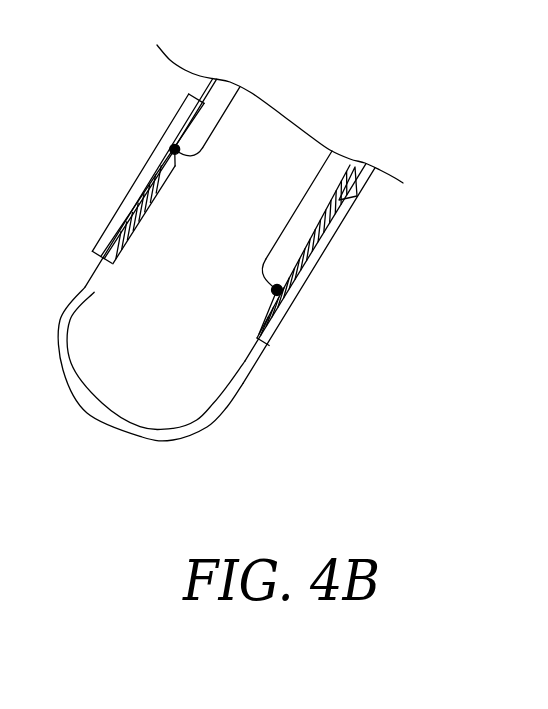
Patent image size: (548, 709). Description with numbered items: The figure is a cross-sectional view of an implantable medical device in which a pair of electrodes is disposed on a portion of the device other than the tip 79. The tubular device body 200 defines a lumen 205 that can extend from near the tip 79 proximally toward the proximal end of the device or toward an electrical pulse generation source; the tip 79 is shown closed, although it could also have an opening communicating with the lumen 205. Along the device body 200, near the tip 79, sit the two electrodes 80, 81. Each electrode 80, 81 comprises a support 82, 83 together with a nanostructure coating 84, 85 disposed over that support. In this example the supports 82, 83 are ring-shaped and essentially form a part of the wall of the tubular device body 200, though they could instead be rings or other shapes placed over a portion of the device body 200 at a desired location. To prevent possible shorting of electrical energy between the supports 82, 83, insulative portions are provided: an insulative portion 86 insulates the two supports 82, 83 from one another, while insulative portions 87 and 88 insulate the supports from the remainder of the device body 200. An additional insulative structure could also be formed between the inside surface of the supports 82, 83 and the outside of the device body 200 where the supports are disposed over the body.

The tip 79 is at (98, 426).
The electrode 80 is at (353, 233).
The electrode 81 is at (296, 326).
The support 82 is at (338, 199).
The support 83 is at (279, 308).
The nanostructure coating 84 is at (320, 256).
The nanostructure coating 85 is at (266, 348).
The insulative portion 86 is at (145, 178).
The insulative portion 87 is at (214, 78).
The insulative portion 88 is at (104, 262).
The device body 200 is at (352, 164).
The lumen 205 is at (172, 400).